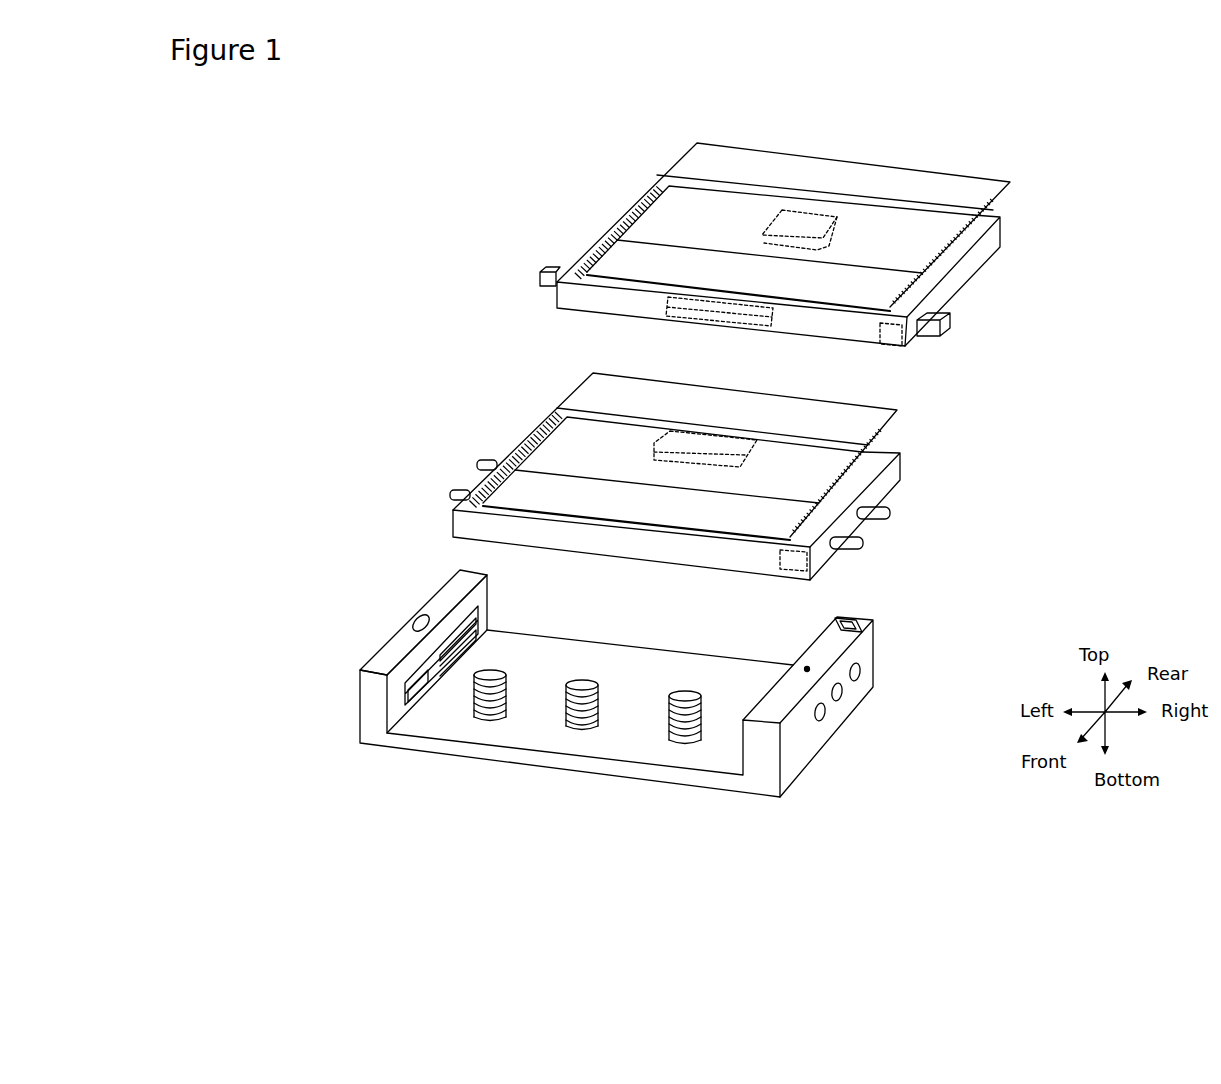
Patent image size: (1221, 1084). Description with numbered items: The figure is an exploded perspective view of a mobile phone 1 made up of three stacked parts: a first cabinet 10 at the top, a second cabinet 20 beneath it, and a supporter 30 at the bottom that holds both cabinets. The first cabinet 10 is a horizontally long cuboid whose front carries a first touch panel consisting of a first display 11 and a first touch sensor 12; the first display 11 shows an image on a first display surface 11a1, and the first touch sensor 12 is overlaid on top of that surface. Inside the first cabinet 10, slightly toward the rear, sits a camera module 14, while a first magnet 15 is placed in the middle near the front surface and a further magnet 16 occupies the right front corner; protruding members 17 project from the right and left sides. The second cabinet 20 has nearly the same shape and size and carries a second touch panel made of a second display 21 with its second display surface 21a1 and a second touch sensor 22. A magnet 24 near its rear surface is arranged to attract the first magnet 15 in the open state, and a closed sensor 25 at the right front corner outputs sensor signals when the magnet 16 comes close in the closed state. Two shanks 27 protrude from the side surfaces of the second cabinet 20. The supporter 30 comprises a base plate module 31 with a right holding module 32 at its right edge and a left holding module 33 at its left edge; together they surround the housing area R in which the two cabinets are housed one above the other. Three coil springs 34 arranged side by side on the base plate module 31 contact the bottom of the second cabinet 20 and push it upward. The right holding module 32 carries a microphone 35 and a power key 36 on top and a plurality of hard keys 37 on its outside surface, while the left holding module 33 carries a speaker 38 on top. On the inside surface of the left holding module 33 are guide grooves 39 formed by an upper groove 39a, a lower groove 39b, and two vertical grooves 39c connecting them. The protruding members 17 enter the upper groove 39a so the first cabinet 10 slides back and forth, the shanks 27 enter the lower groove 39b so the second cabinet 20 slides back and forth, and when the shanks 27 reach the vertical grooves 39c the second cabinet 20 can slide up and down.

The mobile phone 1 is at (524, 152).
The first cabinet 10 is at (792, 237).
The first display 11 is at (597, 250).
The first display surface 11a1 is at (657, 264).
The first touch sensor 12 is at (1010, 180).
The camera module 14 is at (800, 208).
The first magnet 15 is at (770, 337).
The magnet 16 is at (898, 346).
The protruding members 17 is at (543, 270).
The second cabinet 20 is at (689, 487).
The second display 21 is at (455, 507).
The second display surface 21a1 is at (557, 497).
The second touch sensor 22 is at (899, 412).
The magnet 24 is at (698, 462).
The closed sensor 25 is at (812, 571).
The shanks 27 is at (450, 494).
The supporter 30 is at (623, 715).
The base plate module 31 is at (657, 773).
The right holding module 32 is at (790, 752).
The left holding module 33 is at (357, 708).
The coil springs 34 is at (686, 690).
The microphone 35 is at (808, 666).
The power key 36 is at (864, 617).
The hard keys 37 is at (851, 683).
The speaker 38 is at (418, 618).
The guide grooves 39 is at (478, 685).
The upper groove 39a is at (450, 614).
The lower groove 39b is at (477, 632).
The vertical grooves 39c is at (417, 692).
The housing area R is at (703, 680).